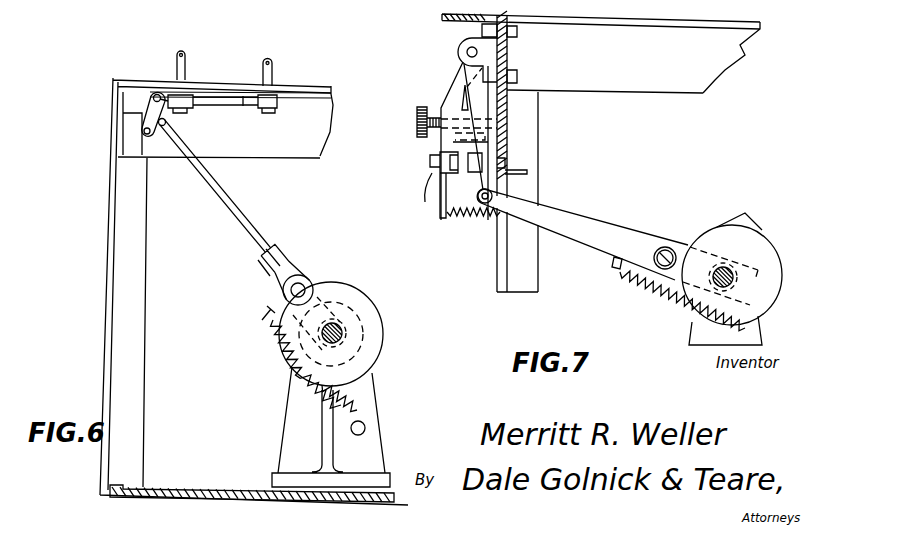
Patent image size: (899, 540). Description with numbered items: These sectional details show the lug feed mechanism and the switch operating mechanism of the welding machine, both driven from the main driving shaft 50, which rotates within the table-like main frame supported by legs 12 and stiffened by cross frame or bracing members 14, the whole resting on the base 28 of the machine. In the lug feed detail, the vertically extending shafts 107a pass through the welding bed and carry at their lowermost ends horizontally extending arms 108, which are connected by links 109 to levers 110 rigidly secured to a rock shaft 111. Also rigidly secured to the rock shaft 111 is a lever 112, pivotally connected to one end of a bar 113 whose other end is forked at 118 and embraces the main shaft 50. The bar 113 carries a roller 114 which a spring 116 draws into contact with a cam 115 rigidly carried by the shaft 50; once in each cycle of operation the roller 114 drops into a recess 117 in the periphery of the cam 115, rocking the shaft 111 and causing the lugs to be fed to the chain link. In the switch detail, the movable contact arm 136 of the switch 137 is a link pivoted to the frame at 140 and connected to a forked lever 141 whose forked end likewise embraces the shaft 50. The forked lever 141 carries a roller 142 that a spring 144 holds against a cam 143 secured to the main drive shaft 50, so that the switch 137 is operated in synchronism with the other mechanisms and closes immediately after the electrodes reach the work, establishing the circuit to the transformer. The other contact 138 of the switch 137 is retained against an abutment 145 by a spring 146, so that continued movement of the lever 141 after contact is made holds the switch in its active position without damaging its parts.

In FIG. 7, the legs 12 is at (535, 185).
In FIG. 7, the cross frame or bracing members 14 is at (712, 68).
In FIG. 6, the base 28 is at (218, 468).
In FIG. 6, the main driving shaft 50 is at (343, 336).
In FIG. 7, the main driving shaft 50 is at (735, 280).
In FIG. 6, the vertically extending shafts 107a is at (273, 70).
In FIG. 6, the horizontally extending arms 108 is at (270, 108).
In FIG. 6, the links 109 is at (243, 105).
In FIG. 6, the levers 110 is at (145, 118).
In FIG. 6, the rock shaft 111 is at (150, 133).
In FIG. 6, the lever 112 is at (167, 126).
In FIG. 6, the bar 113 is at (228, 199).
In FIG. 6, the roller 114 is at (298, 280).
In FIG. 6, the cam 115 is at (364, 297).
In FIG. 6, the spring 116 is at (343, 406).
In FIG. 6, the recess 117 is at (314, 290).
In FIG. 6, the forked end 118 is at (363, 316).
In FIG. 7, the movable contact arm 136 is at (485, 147).
In FIG. 7, the switch 137 is at (470, 80).
In FIG. 7, the contact 138 is at (445, 144).
In FIG. 7, the pivot 140 is at (463, 52).
In FIG. 7, the forked lever 141 is at (607, 228).
In FIG. 7, the roller 142 is at (667, 246).
In FIG. 7, the cam 143 is at (763, 213).
In FIG. 7, the spring 144 is at (648, 287).
In FIG. 7, the abutment 145 is at (497, 127).
In FIG. 7, the spring 146 is at (478, 223).